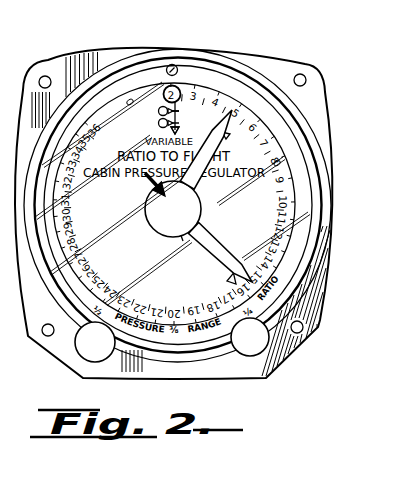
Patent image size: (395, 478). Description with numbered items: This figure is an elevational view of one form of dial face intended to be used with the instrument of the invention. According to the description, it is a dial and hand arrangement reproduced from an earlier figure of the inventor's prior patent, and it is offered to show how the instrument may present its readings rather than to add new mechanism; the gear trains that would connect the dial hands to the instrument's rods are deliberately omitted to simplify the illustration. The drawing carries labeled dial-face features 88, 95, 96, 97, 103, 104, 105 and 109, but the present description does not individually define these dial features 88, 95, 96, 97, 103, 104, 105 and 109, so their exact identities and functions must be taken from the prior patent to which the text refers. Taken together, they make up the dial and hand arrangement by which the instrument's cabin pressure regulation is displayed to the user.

The instrument casing 88 is at (264, 352).
The central hub 95 is at (182, 237).
The ratio limit flight altitude pointer 96 is at (208, 230).
The ratio unit cabin altitude pointer 97 is at (197, 184).
The adjusting knob 103 is at (167, 76).
The index marker 104 is at (228, 136).
The index marker 105 is at (229, 282).
The index arrow 109 is at (149, 182).